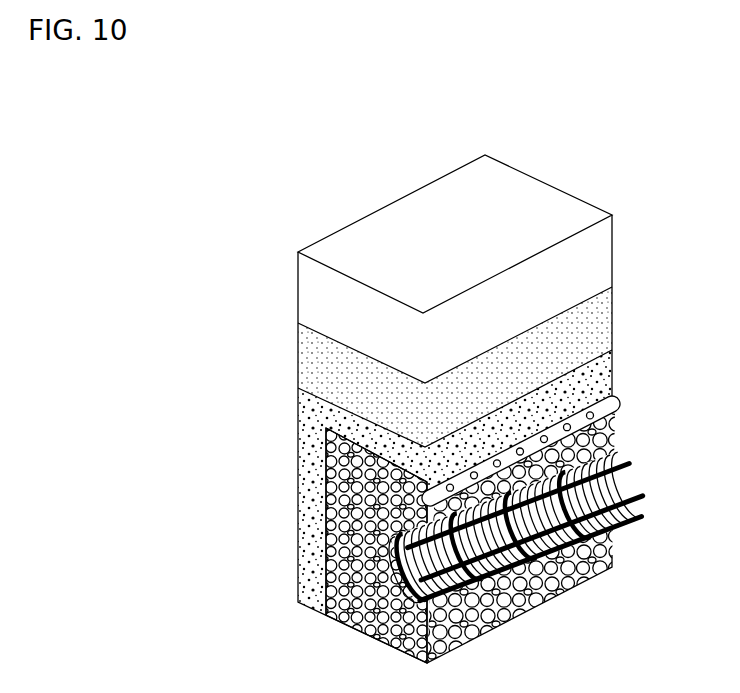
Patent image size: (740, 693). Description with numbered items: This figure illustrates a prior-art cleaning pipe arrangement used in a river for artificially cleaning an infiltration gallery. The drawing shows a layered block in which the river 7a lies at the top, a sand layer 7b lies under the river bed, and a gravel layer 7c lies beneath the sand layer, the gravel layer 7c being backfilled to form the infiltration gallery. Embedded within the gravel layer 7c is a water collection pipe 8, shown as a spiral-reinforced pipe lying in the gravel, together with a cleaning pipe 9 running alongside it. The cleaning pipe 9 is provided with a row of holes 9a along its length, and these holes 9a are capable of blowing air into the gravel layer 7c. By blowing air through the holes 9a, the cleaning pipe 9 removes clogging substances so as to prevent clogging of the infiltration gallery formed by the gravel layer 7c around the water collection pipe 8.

The river 7a is at (387, 222).
The sand layer 7b is at (298, 352).
The gravel layer 7c is at (275, 387).
The water collection pipe 8 is at (593, 498).
The cleaning pipe 9 is at (615, 406).
The holes 9a is at (570, 403).